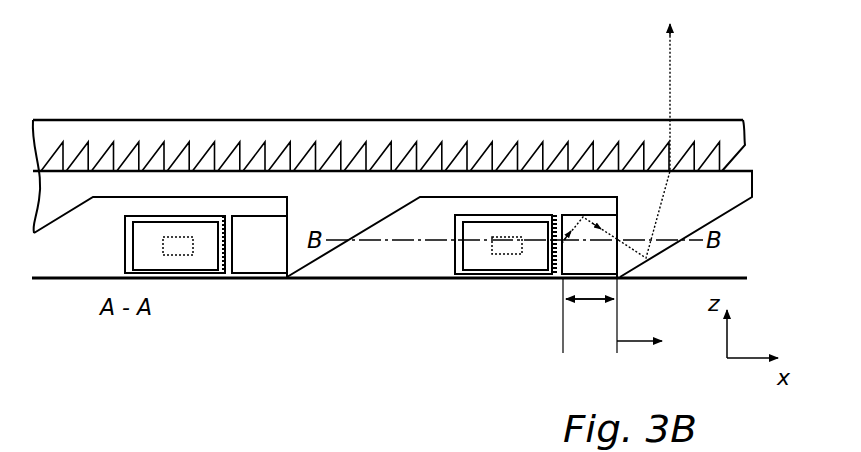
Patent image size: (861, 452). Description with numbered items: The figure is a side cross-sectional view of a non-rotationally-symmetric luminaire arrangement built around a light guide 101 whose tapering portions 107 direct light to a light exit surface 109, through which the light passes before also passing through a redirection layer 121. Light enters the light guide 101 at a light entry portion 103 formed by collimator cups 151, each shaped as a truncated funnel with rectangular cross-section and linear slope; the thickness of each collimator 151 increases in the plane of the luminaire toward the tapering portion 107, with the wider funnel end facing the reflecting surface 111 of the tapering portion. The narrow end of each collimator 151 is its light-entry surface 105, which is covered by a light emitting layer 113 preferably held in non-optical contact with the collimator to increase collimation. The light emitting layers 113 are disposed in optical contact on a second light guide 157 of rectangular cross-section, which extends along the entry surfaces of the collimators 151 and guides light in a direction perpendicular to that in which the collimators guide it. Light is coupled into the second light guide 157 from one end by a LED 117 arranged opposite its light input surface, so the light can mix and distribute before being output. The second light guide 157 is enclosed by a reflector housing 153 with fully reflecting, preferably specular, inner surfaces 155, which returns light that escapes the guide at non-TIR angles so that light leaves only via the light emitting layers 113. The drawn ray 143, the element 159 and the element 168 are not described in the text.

The light guide 101 is at (743, 186).
The light entry portion 103 is at (590, 315).
The light-entry surface 105 is at (555, 262).
The tapering portion 107 is at (639, 358).
The light exit surface 109 is at (641, 177).
The reflecting surface 111 is at (721, 214).
The light emitting layer 113 is at (552, 250).
The LED 117 is at (502, 256).
The redirection layer 121 is at (428, 128).
The light ray 143 is at (670, 90).
The collimator cup 151 is at (606, 262).
The reflector housing 153 is at (455, 265).
The inner surfaces 155 is at (490, 272).
The second light guide 157 is at (461, 269).
The light source package 159 is at (149, 268).
The contact layer 168 is at (217, 242).